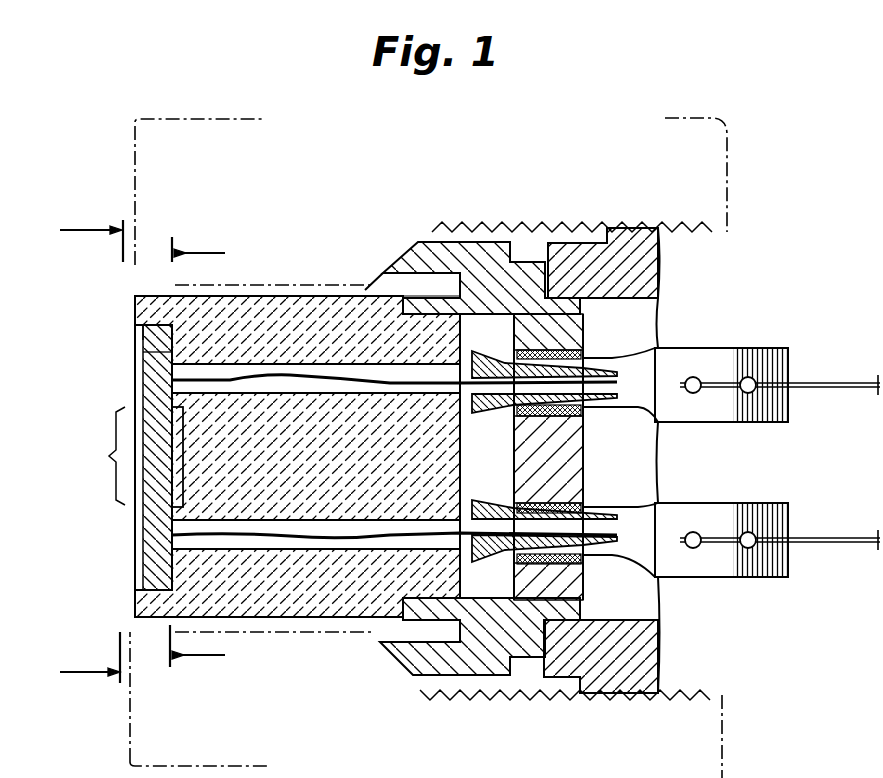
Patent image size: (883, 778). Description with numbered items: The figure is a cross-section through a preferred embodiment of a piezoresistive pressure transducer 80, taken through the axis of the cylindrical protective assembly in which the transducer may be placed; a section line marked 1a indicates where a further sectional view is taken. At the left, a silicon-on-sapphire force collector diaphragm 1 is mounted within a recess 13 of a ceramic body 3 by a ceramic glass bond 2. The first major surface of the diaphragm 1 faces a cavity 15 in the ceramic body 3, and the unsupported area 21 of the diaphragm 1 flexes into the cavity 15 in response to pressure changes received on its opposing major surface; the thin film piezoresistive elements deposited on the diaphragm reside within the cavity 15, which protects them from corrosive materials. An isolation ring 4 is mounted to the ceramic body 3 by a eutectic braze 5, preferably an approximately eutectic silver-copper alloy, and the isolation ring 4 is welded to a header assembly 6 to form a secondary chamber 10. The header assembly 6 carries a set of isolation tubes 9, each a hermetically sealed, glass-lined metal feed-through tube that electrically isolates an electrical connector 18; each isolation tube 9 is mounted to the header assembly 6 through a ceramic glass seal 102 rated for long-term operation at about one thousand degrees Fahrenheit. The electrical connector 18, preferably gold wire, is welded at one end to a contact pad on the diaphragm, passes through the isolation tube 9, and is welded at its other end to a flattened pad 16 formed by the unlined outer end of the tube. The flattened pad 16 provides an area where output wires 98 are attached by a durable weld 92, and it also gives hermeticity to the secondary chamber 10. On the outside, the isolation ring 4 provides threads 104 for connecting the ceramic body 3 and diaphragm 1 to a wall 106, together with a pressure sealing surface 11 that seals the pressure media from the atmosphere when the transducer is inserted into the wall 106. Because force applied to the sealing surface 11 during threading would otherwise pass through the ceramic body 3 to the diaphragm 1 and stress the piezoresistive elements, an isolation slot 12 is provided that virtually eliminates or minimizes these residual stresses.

The piezoresistive pressure transducer 80 is at (100, 160).
The section line 1a is at (90, 456).
The silicon-on-sapphire force collector diaphragm 1 is at (153, 571).
The ceramic glass bond 2 is at (172, 353).
The ceramic body 3 is at (233, 600).
The isolation ring 4 is at (497, 292).
The eutectic braze 5 is at (408, 670).
The header assembly 6 is at (583, 462).
The isolation tube 9 is at (498, 354).
The secondary chamber 10 is at (492, 432).
The pressure sealing surface 11 is at (403, 262).
The isolation slot 12 is at (437, 292).
The recess 13 is at (140, 330).
The cavity 15 is at (178, 494).
The flattened pad 16 is at (772, 348).
The electrical connector 18 is at (228, 378).
The unsupported area 21 is at (109, 456).
The durable weld 92 is at (745, 377).
The output wires 98 is at (815, 388).
The ceramic glass seal 102 is at (570, 332).
The threads 104 is at (633, 224).
The wall 106 is at (138, 738).